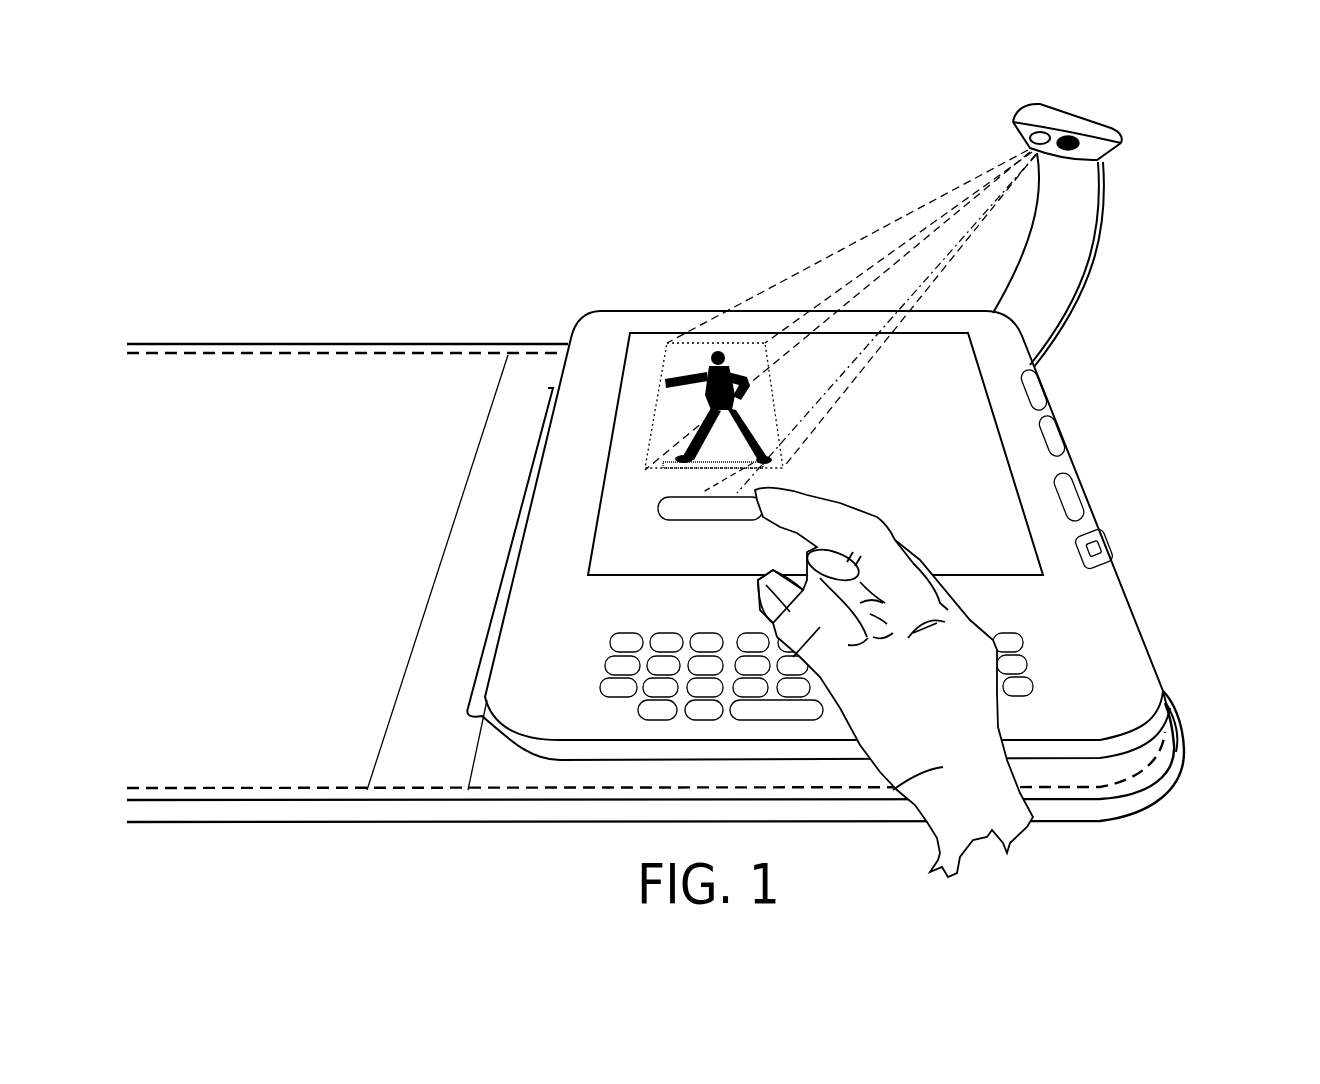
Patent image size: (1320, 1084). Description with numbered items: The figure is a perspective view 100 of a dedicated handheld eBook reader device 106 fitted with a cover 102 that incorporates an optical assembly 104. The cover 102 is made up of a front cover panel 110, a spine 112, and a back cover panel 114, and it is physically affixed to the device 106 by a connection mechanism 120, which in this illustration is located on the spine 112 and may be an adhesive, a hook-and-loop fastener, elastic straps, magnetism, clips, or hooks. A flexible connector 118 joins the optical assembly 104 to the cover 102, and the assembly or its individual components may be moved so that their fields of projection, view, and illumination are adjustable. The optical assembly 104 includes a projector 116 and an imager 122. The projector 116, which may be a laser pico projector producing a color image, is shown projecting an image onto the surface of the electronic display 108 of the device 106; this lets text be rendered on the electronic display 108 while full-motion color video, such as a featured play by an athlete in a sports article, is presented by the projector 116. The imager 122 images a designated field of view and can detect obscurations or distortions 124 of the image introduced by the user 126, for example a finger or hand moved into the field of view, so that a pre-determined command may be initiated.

The perspective view 100 is at (864, 487).
The cover 102 is at (214, 319).
The optical assembly 104 is at (980, 144).
The eBook reader device 106 is at (608, 335).
The electronic display 108 is at (965, 543).
The front cover panel 110 is at (240, 752).
The spine 112 is at (420, 755).
The back cover panel 114 is at (1090, 773).
The projector 116 is at (1012, 127).
The flexible connector 118 is at (1053, 283).
The connection mechanism 120 is at (507, 545).
The imager 122 is at (1106, 161).
The obscurations or distortions 124 is at (810, 417).
The user 126 is at (990, 820).